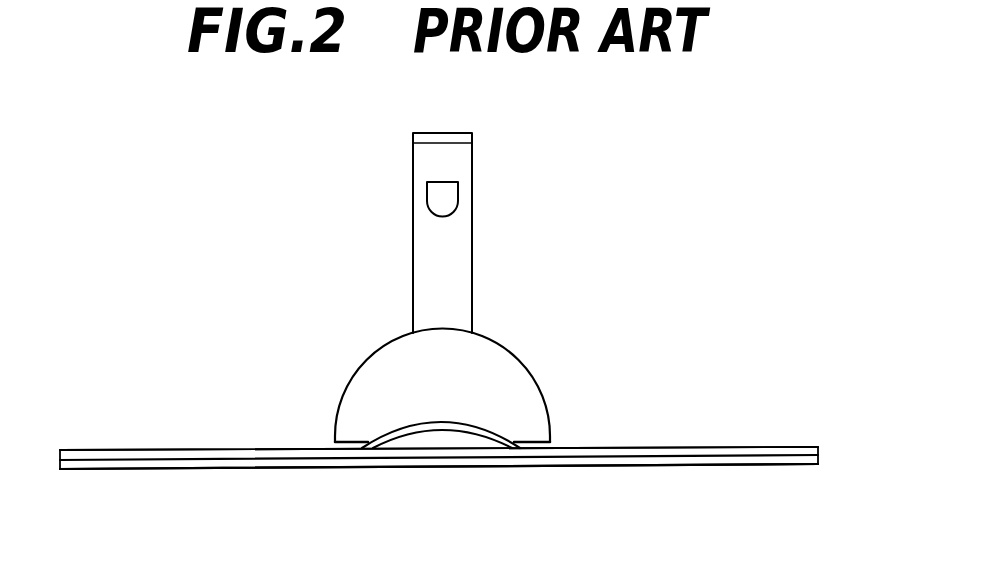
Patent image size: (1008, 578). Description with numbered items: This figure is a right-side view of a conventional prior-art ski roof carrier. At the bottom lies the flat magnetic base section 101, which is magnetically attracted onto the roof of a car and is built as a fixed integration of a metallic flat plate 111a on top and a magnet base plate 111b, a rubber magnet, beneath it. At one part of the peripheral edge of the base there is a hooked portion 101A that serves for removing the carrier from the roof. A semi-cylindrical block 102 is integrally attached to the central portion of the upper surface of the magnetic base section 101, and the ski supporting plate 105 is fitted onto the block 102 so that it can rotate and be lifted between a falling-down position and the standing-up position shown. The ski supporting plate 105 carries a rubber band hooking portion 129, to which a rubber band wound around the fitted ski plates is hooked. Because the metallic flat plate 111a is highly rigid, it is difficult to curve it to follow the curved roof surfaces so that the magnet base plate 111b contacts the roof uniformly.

The magnetic base section 101 is at (712, 445).
The hooked portion 101A is at (447, 443).
The semi-cylindrical block 102 is at (517, 358).
The ski supporting plate 105 is at (472, 210).
The rubber band hooking portion 129 is at (445, 197).
The metallic flat plate 111a is at (152, 451).
The magnet base plate 111b is at (207, 462).